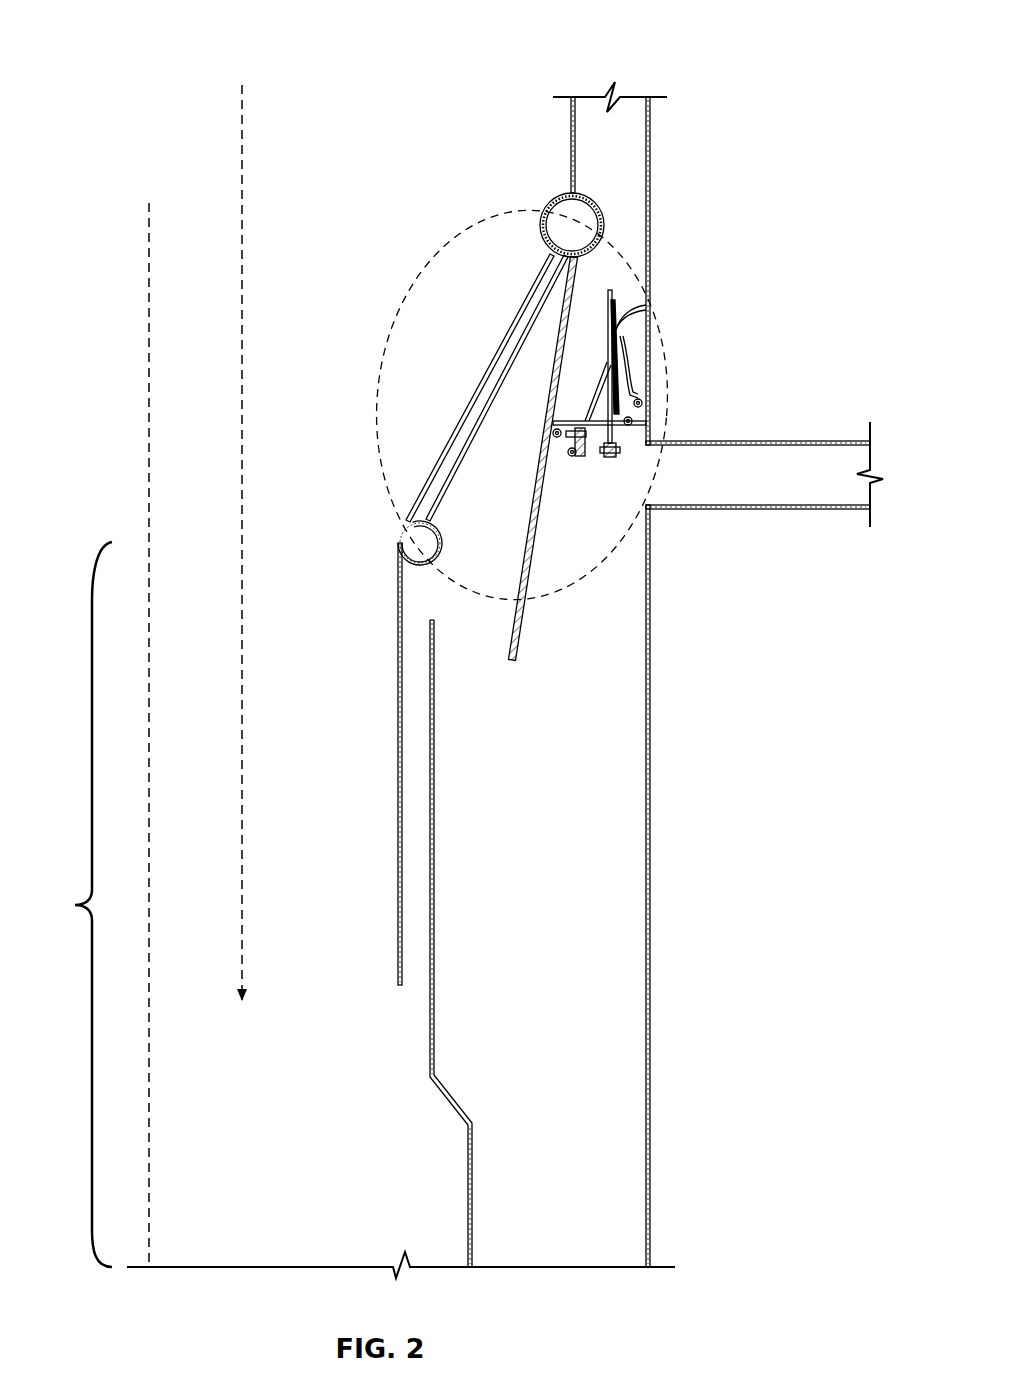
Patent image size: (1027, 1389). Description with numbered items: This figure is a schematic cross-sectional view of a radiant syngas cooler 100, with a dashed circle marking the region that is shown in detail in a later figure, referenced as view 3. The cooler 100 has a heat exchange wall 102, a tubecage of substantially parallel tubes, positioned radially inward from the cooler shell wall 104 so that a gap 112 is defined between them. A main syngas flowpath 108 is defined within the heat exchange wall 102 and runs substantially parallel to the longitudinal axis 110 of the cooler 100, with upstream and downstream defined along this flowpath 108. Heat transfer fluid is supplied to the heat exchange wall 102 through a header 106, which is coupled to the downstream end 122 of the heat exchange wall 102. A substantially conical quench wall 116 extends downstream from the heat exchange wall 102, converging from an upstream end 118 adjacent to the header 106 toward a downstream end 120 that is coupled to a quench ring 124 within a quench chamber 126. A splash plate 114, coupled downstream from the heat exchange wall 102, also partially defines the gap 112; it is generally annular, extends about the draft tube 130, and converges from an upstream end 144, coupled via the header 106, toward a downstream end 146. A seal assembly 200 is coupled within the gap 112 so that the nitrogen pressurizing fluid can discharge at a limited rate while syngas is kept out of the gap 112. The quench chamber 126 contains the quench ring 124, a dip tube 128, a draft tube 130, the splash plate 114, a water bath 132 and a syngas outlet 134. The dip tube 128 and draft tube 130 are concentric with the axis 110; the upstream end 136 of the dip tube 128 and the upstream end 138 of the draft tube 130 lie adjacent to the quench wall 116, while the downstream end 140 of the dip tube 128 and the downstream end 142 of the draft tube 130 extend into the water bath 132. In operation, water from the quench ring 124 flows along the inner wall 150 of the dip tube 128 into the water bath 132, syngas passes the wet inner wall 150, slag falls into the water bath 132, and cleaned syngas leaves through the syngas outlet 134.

The syngas cooler 100 is at (118, 44).
The heat exchange wall 102 is at (572, 130).
The cooler shell wall 104 is at (651, 178).
The header 106 is at (548, 212).
The main syngas flowpath 108 is at (244, 218).
The longitudinal axis 110 is at (147, 320).
The gap 112 is at (624, 140).
The splash plate 114 is at (527, 602).
The quench wall 116 is at (484, 380).
The upstream end of quench wall 118 is at (548, 268).
The downstream end of quench wall 120 is at (407, 516).
The downstream end of heat exchange wall 122 is at (568, 172).
The quench ring 124 is at (399, 546).
The quench chamber 126 is at (63, 904).
The dip tube 128 is at (398, 640).
The draft tube 130 is at (436, 775).
The water bath 132 is at (210, 1250).
The syngas outlet 134 is at (762, 458).
The upstream end of dip tube 136 is at (395, 565).
The upstream end of draft tube 138 is at (434, 616).
The downstream end of dip tube 140 is at (395, 982).
The downstream end of draft tube 142 is at (480, 1252).
The upstream end of splash plate 144 is at (586, 264).
The downstream end of splash plate 146 is at (519, 663).
The inner wall of dip tube 150 is at (395, 820).
The seal assembly 200 is at (659, 360).
The detail view region 3 is at (460, 253).